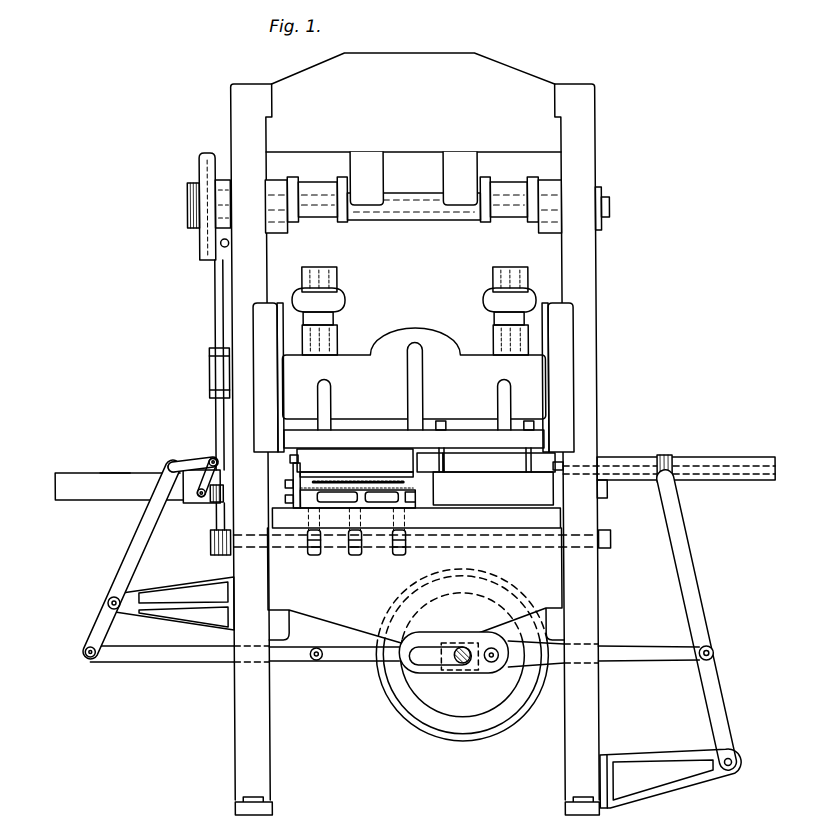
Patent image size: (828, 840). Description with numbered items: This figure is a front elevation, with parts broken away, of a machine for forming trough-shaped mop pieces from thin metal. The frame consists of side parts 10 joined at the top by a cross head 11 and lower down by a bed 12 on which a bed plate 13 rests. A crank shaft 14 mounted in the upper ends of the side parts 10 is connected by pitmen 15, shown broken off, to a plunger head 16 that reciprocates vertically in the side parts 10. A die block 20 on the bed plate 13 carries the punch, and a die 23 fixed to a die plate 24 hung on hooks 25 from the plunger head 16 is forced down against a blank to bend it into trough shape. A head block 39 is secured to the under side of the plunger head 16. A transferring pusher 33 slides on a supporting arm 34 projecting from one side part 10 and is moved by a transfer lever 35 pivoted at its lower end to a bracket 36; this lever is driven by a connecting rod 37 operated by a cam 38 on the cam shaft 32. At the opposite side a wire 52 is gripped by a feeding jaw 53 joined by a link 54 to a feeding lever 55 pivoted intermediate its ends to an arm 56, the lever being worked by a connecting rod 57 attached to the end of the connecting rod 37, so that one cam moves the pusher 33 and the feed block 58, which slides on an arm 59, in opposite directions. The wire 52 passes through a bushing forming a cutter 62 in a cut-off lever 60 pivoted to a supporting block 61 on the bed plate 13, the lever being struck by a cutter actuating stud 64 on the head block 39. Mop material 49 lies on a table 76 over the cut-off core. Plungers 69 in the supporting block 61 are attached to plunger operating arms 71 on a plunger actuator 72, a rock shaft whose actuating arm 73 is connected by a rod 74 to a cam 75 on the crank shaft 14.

The side parts 10 is at (585, 271).
The cross head 11 is at (528, 82).
The bed 12 is at (548, 585).
The bed plate 13 is at (560, 519).
The crank shaft 14 is at (431, 212).
The pitmen 15 is at (504, 270).
The plunger head 16 is at (379, 358).
The die block 20 is at (476, 490).
The die 23 is at (458, 470).
The die plate 24 is at (502, 462).
The hooks 25 is at (525, 460).
The cam shaft 32 is at (462, 664).
The transferring pusher 33 is at (563, 466).
The supporting arm 34 is at (733, 457).
The transfer lever 35 is at (683, 543).
The bracket 36 is at (662, 757).
The connecting rod 37 is at (640, 653).
The cam 38 is at (514, 708).
The head block 39 is at (372, 460).
The mop material 49 is at (343, 480).
The wire 52 is at (55, 486).
The feeding jaw 53 is at (210, 460).
The link 54 is at (172, 462).
The feeding lever 55 is at (130, 548).
The arm 56 is at (172, 594).
The connecting rod 57 is at (187, 663).
The feed block 58 is at (190, 503).
The arm 59 is at (106, 484).
The cut-off lever 60 is at (308, 474).
The supporting block 61 is at (343, 497).
The cutter 62 is at (285, 484).
The cutter actuating stud 64 is at (299, 460).
The plungers 69 is at (308, 517).
The plunger operating arms 71 is at (313, 550).
The plunger actuator 72 is at (537, 540).
The actuating arm 73 is at (218, 555).
The rod 74 is at (216, 322).
The cam 75 is at (202, 160).
The table 76 is at (383, 497).